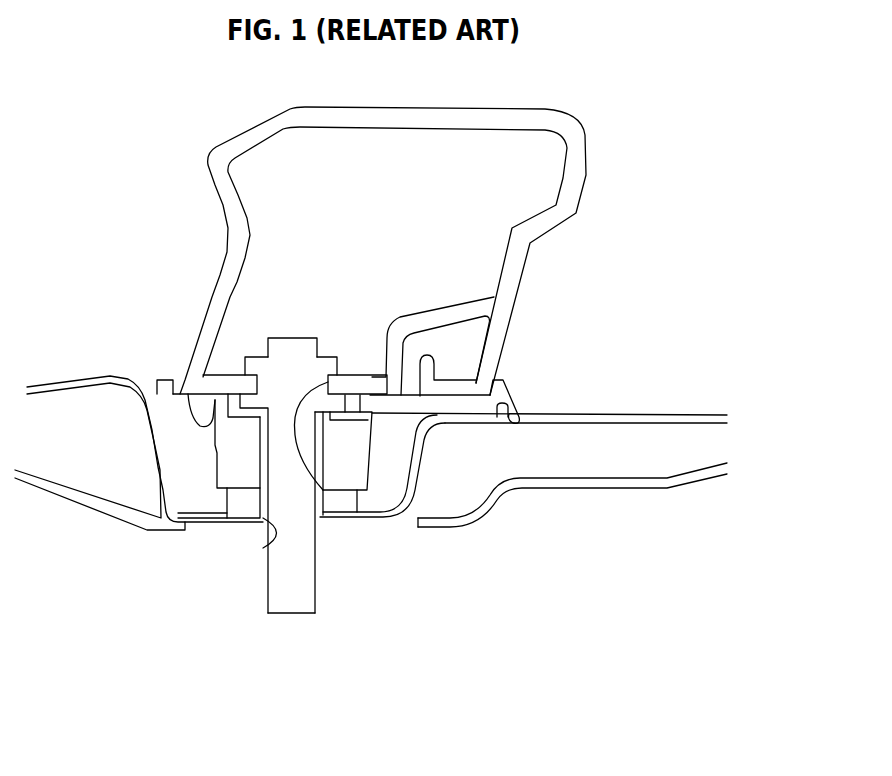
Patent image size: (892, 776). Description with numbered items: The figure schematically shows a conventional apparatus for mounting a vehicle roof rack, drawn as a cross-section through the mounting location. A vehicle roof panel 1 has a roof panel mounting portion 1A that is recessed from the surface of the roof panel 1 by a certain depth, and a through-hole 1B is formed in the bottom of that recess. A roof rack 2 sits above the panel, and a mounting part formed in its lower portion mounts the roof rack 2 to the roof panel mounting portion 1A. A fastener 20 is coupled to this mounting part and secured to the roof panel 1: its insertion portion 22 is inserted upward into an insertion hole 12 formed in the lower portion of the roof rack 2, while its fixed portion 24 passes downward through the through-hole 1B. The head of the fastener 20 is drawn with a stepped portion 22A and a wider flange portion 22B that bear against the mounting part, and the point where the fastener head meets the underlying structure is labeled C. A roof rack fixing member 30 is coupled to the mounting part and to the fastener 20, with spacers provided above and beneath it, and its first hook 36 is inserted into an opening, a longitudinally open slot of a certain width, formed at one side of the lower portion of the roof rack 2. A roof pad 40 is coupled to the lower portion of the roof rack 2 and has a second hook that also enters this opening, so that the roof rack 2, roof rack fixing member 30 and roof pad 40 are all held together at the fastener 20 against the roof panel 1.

The vehicle roof panel 1 is at (635, 414).
The roof panel mounting portion 1A is at (178, 480).
The through-hole 1B is at (263, 548).
The roof rack 2 is at (571, 219).
The insertion hole 12 is at (308, 465).
The fastener 20 is at (293, 615).
The insertion portion 22 is at (283, 336).
The head step portion 22A is at (262, 352).
The head flange portion 22B is at (243, 372).
The fixed portion 24 is at (303, 575).
The roof rack fixing member 30 is at (369, 451).
The first hook 36 is at (450, 378).
The roof pad 40 is at (507, 391).
The contact point C is at (237, 393).